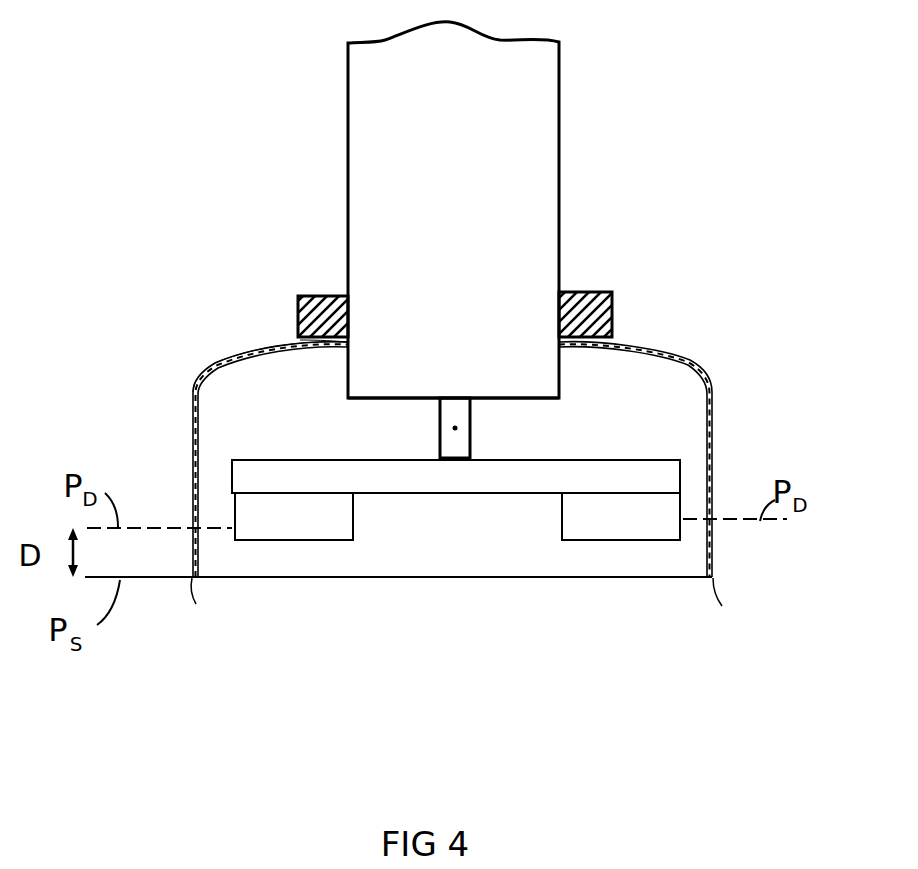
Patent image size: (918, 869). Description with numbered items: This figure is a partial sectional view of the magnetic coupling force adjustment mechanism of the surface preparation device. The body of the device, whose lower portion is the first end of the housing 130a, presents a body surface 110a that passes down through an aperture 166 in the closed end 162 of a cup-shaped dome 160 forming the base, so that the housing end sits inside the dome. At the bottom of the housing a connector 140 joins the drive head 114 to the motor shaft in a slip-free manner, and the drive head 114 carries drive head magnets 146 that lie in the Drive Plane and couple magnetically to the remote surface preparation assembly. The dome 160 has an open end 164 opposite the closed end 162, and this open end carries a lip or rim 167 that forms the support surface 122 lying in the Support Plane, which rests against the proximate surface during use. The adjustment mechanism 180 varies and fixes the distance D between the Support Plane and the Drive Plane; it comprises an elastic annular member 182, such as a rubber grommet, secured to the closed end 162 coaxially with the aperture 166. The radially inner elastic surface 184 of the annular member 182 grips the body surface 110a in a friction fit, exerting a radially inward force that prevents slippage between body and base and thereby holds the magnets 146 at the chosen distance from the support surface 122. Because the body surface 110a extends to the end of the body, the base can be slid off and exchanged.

The body surface 110a is at (348, 222).
The first end of the housing 130a is at (565, 383).
The connector 140 is at (472, 436).
The drive head 114 is at (290, 460).
The drive head magnet 146 is at (457, 516).
The adjustment mechanism 180 is at (585, 280).
The elastic annular member 182 is at (600, 292).
The radially inner elastic surface 184 is at (353, 318).
The cup-shaped dome 160 is at (718, 406).
The closed end 162 is at (222, 362).
The aperture 166 is at (342, 350).
The lip or rim 167 is at (448, 578).
The support surface 122 is at (216, 598).
The open end 164 is at (740, 600).